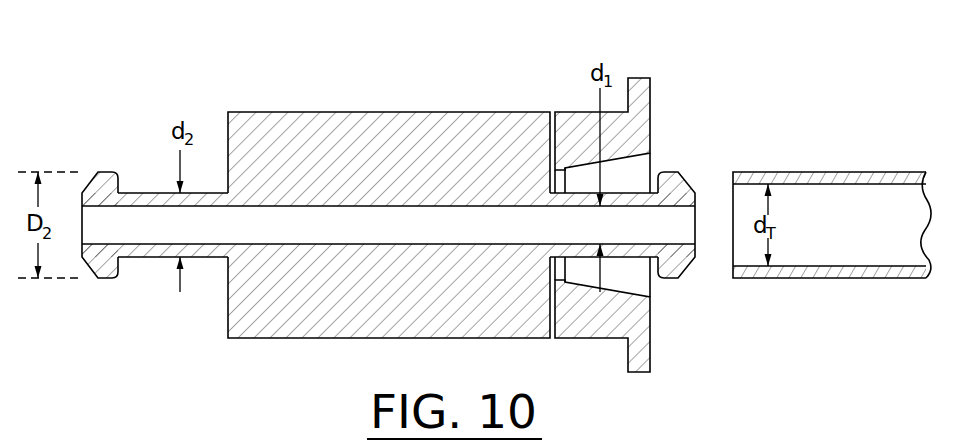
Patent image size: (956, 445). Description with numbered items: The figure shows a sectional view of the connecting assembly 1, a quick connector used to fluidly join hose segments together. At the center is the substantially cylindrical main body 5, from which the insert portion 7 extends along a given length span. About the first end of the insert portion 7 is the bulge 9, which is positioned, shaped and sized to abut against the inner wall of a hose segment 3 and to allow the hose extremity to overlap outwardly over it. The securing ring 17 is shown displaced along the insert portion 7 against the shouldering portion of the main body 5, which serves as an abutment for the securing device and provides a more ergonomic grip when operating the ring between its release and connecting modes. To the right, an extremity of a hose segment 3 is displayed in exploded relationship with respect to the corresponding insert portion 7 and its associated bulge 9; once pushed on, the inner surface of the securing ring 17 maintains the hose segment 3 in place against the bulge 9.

The connecting assembly 1 is at (788, 68).
The hose segment 3 is at (857, 171).
The main body 5 is at (486, 110).
The insert portion 7 is at (148, 262).
The bulge 9 is at (109, 150).
The securing ring 17 is at (653, 128).